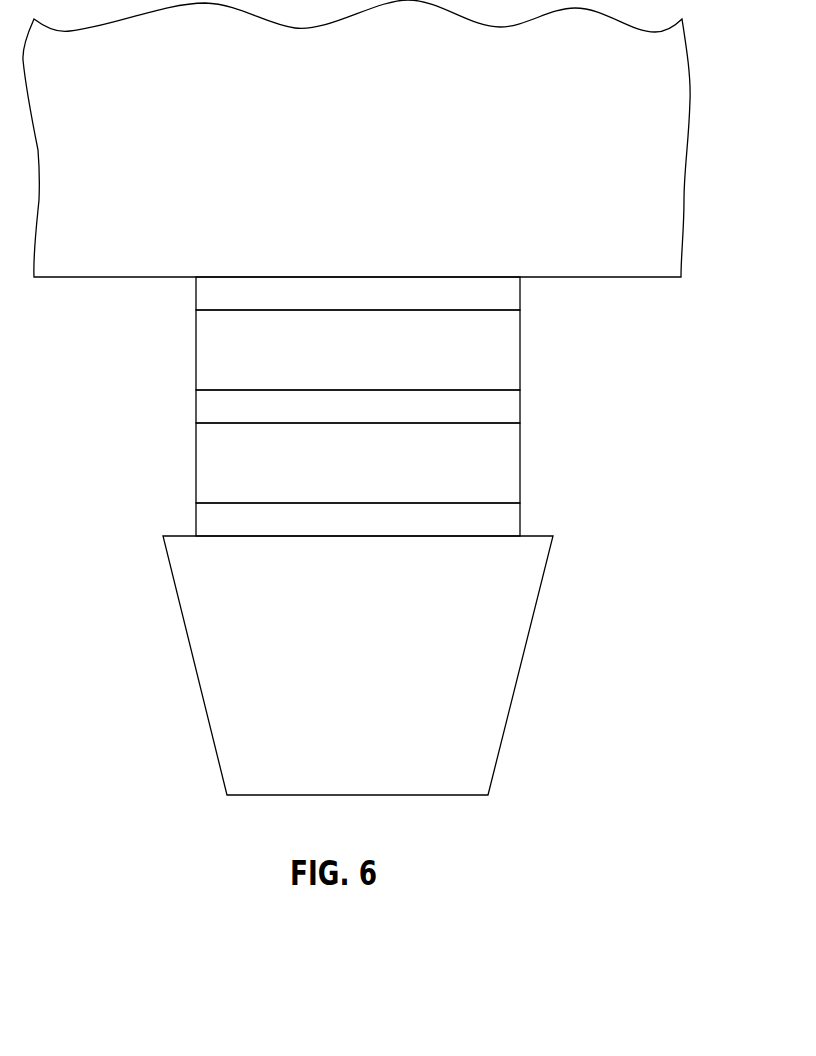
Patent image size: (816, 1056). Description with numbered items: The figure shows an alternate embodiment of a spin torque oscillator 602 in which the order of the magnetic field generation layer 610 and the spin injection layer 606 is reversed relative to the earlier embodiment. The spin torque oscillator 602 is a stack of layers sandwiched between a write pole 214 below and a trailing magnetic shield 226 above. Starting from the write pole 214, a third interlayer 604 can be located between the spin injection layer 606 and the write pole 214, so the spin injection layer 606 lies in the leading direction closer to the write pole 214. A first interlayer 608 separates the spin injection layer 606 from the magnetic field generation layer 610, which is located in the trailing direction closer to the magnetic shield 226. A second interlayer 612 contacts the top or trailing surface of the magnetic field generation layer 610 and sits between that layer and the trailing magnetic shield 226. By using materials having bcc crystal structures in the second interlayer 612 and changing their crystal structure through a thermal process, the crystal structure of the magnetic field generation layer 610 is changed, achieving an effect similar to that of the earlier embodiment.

The trailing magnetic shield 226 is at (392, 150).
The second interlayer 612 is at (394, 293).
The magnetic field generation layer 610 is at (391, 343).
The first interlayer 608 is at (392, 406).
The spin injection layer 606 is at (391, 465).
The third interlayer 604 is at (394, 521).
The spin torque oscillator 602 is at (689, 537).
The write pole 214 is at (384, 650).